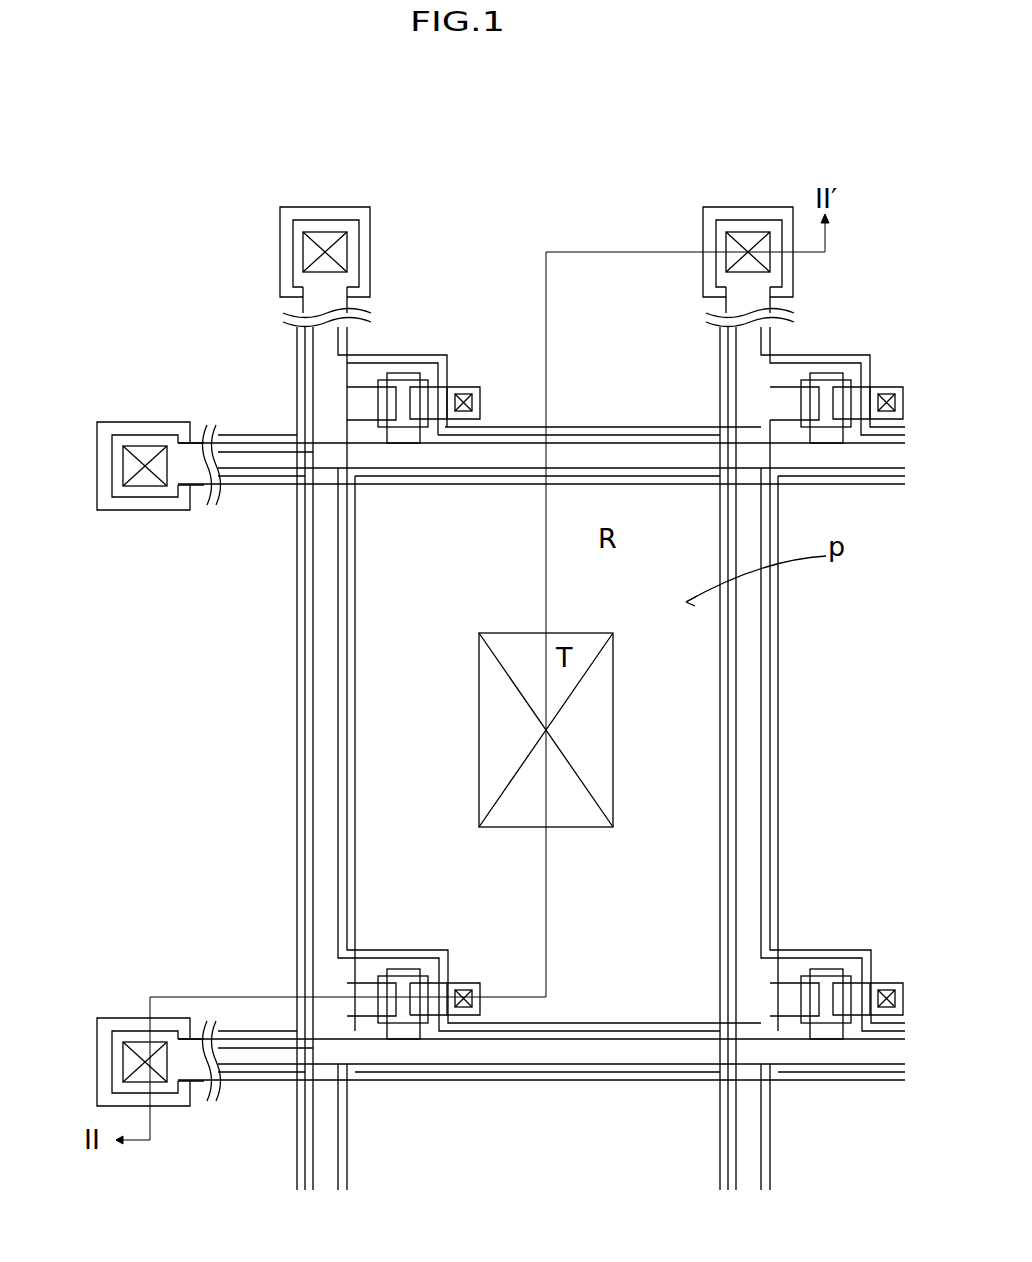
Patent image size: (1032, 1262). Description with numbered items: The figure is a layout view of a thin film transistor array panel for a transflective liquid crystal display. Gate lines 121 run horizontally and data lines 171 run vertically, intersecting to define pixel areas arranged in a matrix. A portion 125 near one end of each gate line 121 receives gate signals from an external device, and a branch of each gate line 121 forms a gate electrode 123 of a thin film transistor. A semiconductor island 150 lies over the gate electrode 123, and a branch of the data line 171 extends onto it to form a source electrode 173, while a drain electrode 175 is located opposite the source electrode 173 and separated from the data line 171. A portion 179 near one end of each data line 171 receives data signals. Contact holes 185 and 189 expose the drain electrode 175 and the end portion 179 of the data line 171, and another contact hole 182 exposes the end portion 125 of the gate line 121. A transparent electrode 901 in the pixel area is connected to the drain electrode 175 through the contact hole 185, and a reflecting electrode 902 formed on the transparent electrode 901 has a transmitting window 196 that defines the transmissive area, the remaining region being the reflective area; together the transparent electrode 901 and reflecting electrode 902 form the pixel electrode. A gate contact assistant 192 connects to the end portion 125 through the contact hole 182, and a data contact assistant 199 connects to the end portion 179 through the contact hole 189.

The gate line 121 is at (541, 1053).
The gate electrode 123 is at (402, 1013).
The end portion of gate line 125 is at (110, 1044).
The semiconductor island 150 is at (410, 1024).
The data line 171 is at (318, 672).
The source electrode 173 is at (371, 993).
The drain electrode 175 is at (470, 1018).
The end portion of data line 179 is at (775, 215).
The contact hole 182 is at (118, 1074).
The contact hole 185 is at (465, 988).
The contact hole 189 is at (737, 232).
The gate contact assistant 192 is at (163, 1108).
The transmitting window 196 is at (505, 829).
The data contact assistant 199 is at (797, 270).
The transparent electrode 901 is at (354, 780).
The reflecting electrode 902 is at (340, 727).